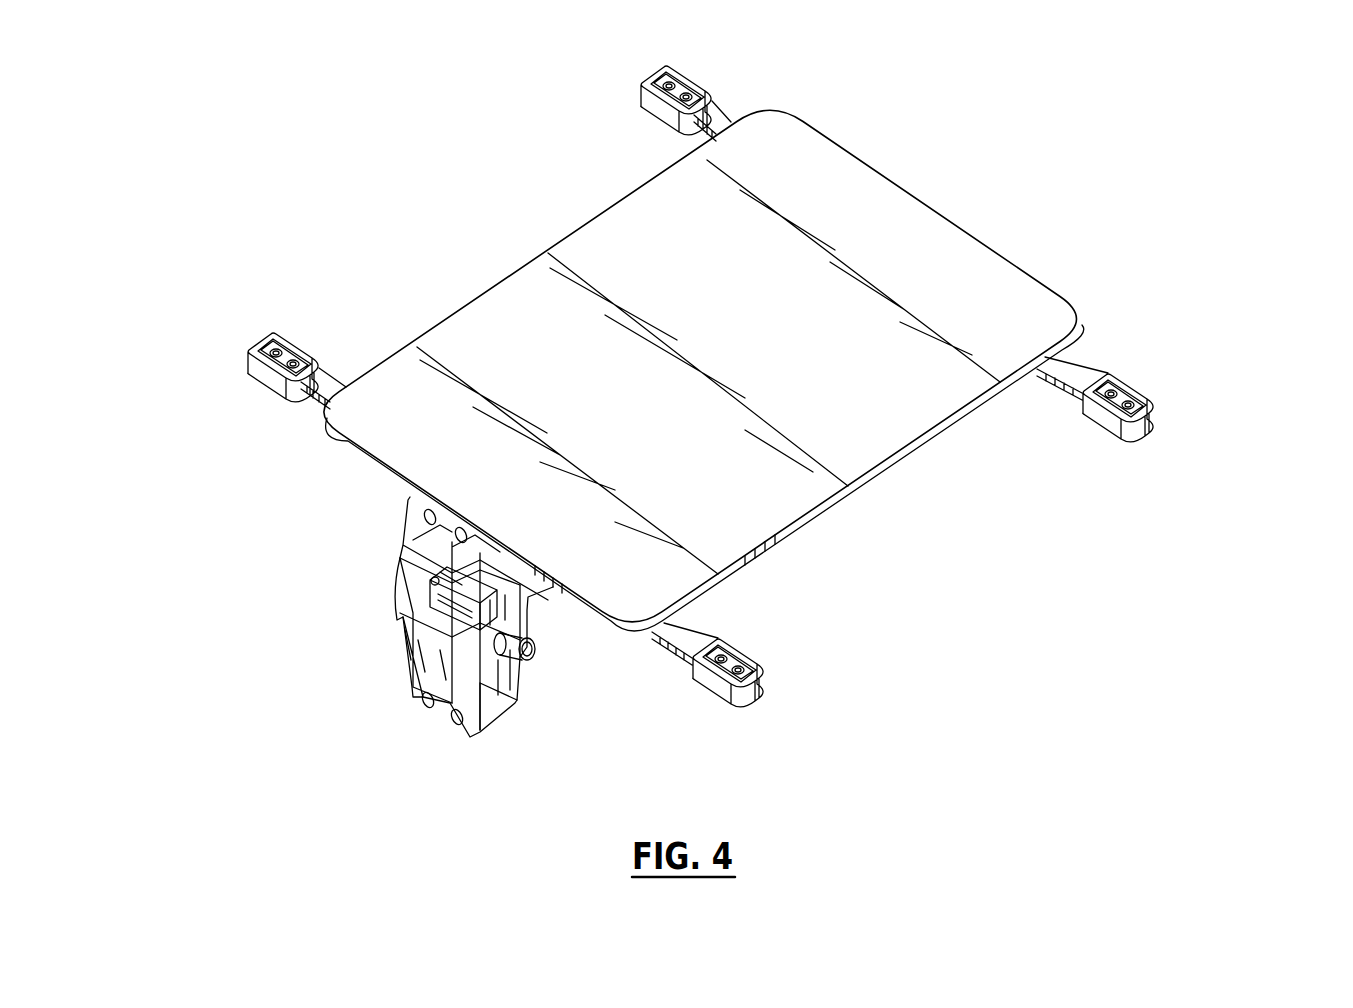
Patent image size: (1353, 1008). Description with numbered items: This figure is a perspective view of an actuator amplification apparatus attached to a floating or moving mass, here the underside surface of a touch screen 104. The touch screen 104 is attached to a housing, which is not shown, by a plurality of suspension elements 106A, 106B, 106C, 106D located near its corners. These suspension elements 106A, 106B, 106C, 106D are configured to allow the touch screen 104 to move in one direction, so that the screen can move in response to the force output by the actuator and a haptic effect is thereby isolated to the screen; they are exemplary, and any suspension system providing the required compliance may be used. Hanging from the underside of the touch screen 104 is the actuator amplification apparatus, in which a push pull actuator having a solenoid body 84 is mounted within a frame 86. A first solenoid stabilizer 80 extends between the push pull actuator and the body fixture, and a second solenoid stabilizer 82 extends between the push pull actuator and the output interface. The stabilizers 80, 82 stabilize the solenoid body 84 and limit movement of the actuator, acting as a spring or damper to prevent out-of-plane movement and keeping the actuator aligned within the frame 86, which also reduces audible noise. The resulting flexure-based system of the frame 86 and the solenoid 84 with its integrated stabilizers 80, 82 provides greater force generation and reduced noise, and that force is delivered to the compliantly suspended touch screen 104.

The touch screen 104 is at (863, 210).
The suspension element 106A is at (250, 348).
The suspension element 106B is at (640, 96).
The suspension element 106C is at (768, 686).
The suspension element 106D is at (1157, 418).
The first solenoid stabilizer 80 is at (402, 648).
The second solenoid stabilizer 82 is at (405, 553).
The solenoid body 84 is at (406, 600).
The frame 86 is at (518, 700).